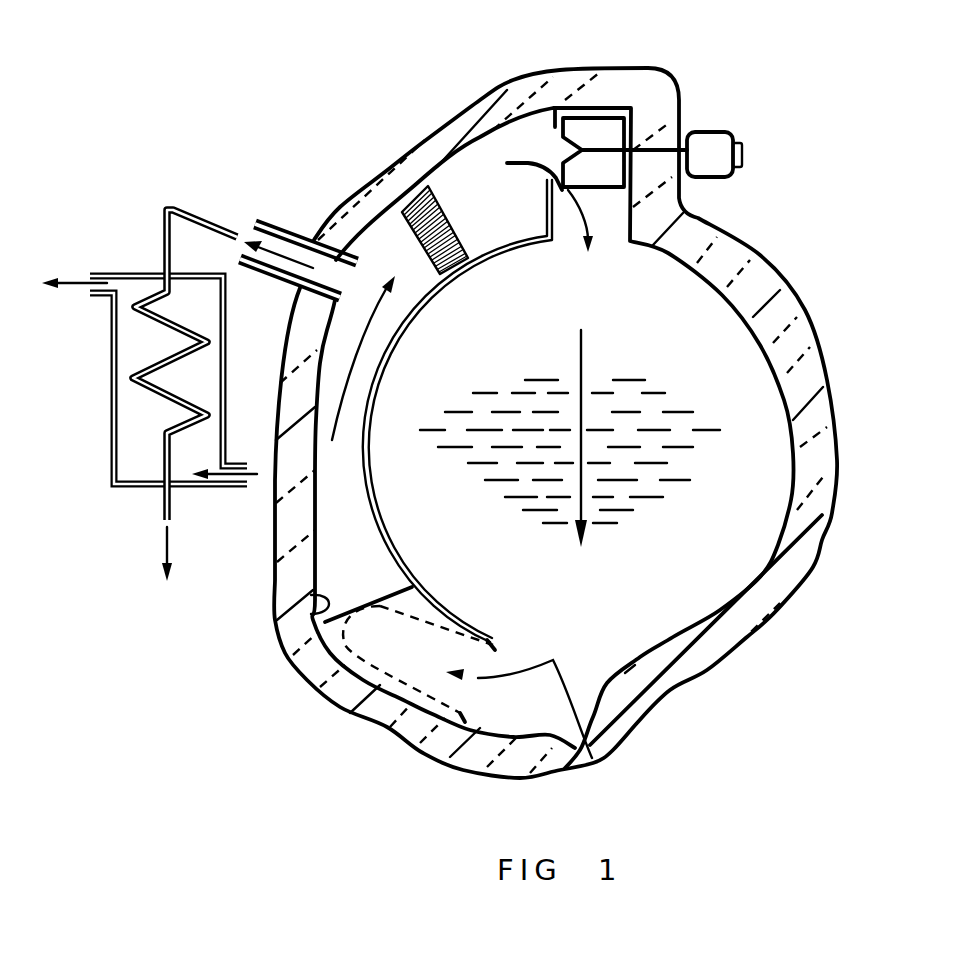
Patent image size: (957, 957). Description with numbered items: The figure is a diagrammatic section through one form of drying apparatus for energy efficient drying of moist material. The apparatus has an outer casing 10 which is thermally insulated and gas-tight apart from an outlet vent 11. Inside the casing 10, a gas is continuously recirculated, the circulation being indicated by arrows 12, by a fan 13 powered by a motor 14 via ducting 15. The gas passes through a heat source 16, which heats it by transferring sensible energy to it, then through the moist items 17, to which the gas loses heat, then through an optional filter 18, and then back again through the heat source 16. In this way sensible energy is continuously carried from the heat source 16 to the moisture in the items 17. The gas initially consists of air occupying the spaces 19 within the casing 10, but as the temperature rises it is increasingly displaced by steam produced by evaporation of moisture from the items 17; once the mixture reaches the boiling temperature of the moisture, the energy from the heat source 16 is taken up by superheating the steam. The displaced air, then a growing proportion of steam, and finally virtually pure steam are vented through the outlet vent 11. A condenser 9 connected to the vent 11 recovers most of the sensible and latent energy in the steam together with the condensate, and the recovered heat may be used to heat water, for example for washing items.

The condenser 9 is at (112, 455).
The outer casing 10 is at (727, 648).
The outlet vent 11 is at (283, 240).
The arrows 12 is at (525, 162).
The fan 13 is at (608, 140).
The motor 14 is at (723, 162).
The ducting 15 is at (325, 622).
The heat source 16 is at (430, 203).
The moist items 17 is at (665, 413).
The filter 18 is at (387, 667).
The spaces 19 is at (397, 533).